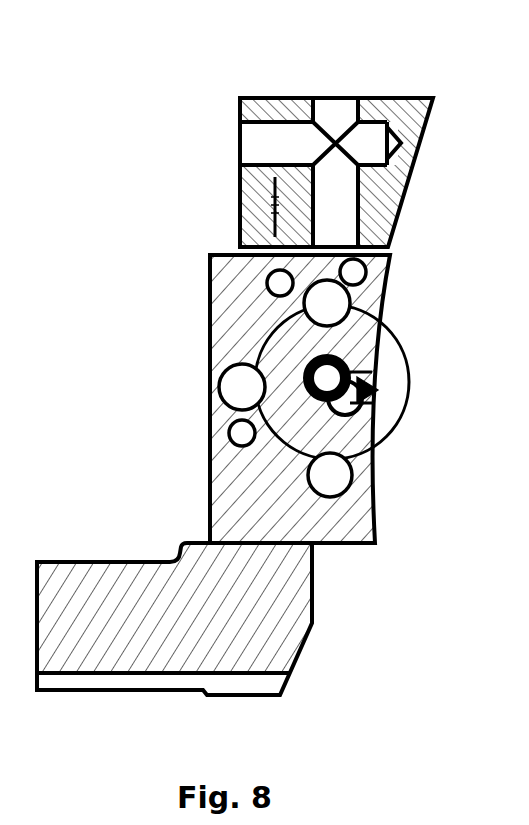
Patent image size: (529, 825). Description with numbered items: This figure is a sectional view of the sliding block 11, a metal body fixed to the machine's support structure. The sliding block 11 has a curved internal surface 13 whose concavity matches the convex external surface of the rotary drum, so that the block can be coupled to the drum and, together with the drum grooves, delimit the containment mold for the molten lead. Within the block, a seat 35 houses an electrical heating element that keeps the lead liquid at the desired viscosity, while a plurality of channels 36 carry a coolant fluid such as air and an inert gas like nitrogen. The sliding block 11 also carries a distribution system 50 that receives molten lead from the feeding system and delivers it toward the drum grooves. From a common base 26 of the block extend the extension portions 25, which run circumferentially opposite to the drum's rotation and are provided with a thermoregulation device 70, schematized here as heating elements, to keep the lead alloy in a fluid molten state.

The sliding block 11 is at (97, 153).
The curved internal surface 13 is at (373, 473).
The extension portions 25 is at (418, 110).
The common base 26 is at (333, 513).
The seat of electrical heating element 35 is at (328, 308).
The channels 36 is at (280, 283).
The distribution system 50 is at (356, 350).
The thermoregulation device 70 is at (258, 203).